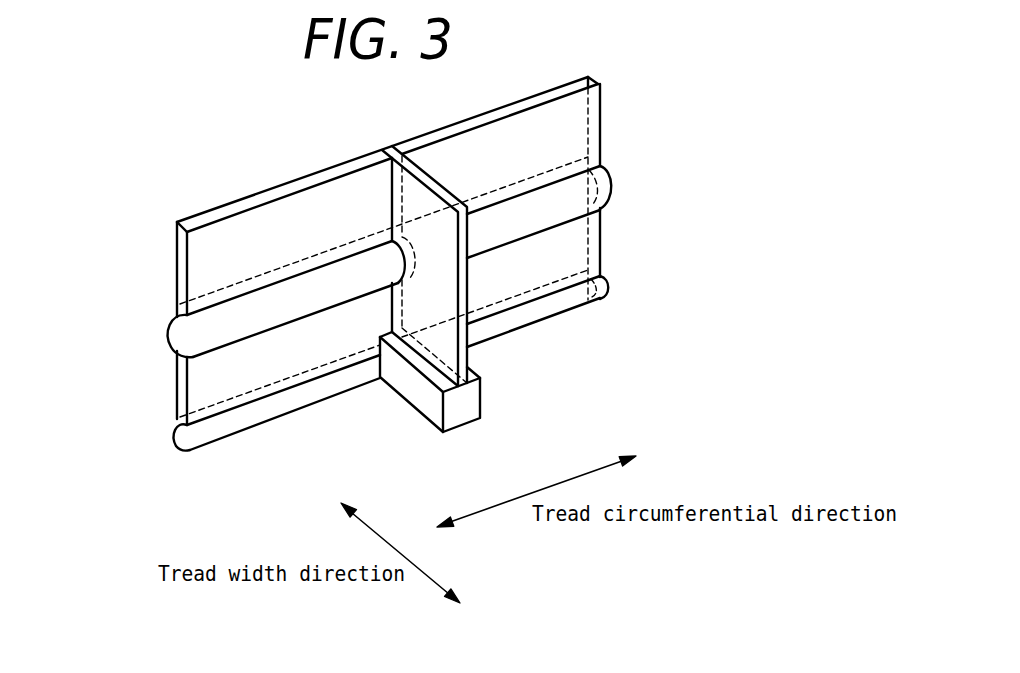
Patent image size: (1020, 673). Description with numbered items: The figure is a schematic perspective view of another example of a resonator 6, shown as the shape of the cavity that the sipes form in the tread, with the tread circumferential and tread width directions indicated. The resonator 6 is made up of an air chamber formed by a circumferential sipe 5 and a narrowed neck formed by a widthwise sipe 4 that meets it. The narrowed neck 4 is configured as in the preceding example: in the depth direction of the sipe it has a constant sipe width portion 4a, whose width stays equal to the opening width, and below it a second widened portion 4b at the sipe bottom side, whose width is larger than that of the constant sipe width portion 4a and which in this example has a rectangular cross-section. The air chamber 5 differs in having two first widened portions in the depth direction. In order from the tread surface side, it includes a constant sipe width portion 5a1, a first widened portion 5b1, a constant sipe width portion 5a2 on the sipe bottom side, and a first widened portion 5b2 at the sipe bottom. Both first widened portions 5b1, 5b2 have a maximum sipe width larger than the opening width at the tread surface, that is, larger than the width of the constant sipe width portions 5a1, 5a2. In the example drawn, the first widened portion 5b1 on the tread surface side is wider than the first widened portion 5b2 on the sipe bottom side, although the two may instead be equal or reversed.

The resonator 6 is at (255, 150).
The air chamber (circumferential sipe) 5 is at (82, 225).
The constant sipe width portion on the tread surface side 5a1 is at (177, 263).
The first widened portion on the tread surface side 5b1 is at (168, 330).
The constant sipe width portion on the sipe bottom side 5a2 is at (177, 390).
The first widened portion on the sipe bottom side 5b2 is at (175, 441).
The narrowed neck (widthwise sipe) 4 is at (555, 352).
The constant sipe width portion 4a is at (465, 330).
The second widened portion 4b is at (465, 393).